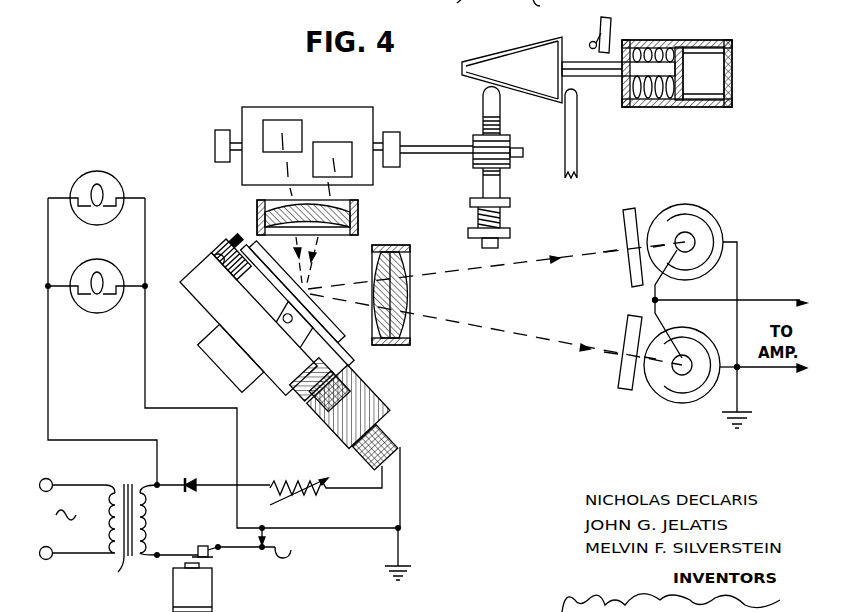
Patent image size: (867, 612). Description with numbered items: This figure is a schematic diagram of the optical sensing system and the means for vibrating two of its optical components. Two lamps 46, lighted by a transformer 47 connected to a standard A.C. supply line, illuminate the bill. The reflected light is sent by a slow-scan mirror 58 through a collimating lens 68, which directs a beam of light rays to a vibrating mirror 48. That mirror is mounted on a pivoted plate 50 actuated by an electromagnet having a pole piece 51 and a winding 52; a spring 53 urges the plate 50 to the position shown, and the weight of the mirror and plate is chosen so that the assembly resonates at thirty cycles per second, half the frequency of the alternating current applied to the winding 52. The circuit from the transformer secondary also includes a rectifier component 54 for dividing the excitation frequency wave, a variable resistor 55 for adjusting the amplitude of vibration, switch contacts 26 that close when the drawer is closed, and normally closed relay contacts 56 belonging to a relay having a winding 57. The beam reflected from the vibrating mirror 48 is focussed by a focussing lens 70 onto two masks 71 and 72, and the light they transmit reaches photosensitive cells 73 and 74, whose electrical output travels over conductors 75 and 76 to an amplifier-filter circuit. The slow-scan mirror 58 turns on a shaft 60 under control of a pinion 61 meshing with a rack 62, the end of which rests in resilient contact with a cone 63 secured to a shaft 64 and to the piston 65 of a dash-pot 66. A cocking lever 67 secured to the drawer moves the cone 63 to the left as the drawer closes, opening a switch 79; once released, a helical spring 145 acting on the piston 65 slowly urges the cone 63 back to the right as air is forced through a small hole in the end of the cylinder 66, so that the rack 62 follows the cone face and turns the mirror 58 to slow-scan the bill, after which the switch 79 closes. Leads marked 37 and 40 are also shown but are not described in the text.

The switch contacts 26 is at (262, 552).
The lead 37 is at (448, 6).
The lead 40 is at (547, 8).
The lamps 46 is at (110, 221).
The transformer 47 is at (122, 566).
The vibrating mirror 48 is at (327, 318).
The pivoted plate 50 is at (356, 362).
The pole piece 51 is at (393, 400).
The winding 52 is at (393, 452).
The spring 53 is at (222, 250).
The rectifier component 54 is at (191, 481).
The variable resistor 55 is at (318, 498).
The relay contacts 56 is at (205, 544).
The relay winding 57 is at (212, 591).
The slow-scan mirror 58 is at (318, 107).
The shaft 60 is at (446, 150).
The pinion 61 is at (478, 135).
The rack 62 is at (498, 175).
The cone 63 is at (490, 60).
The shaft 64 is at (593, 74).
The piston 65 is at (685, 76).
The dash-pot 66 is at (712, 107).
The cocking lever 67 is at (575, 122).
The collimating lens 68 is at (359, 226).
The focussing lens 70 is at (401, 268).
The mask 71 is at (625, 233).
The mask 72 is at (622, 375).
The photosensitive cell 73 is at (718, 231).
The photosensitive cell 74 is at (681, 403).
The conductor 75 is at (757, 301).
The conductor 76 is at (766, 370).
The switch 79 is at (612, 25).
The helical spring 145 is at (654, 97).